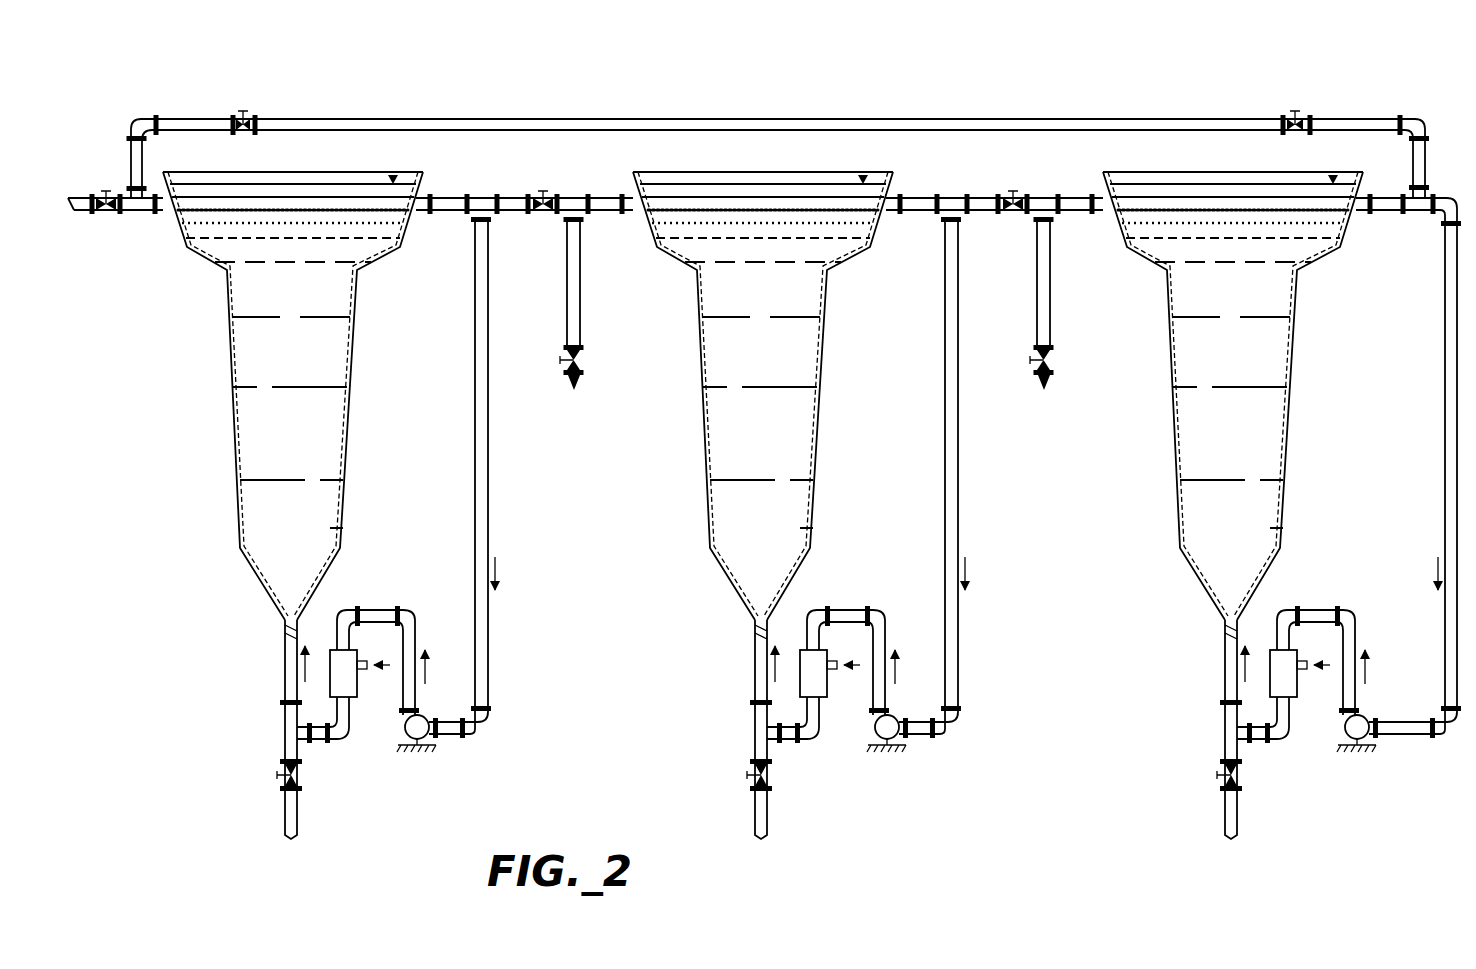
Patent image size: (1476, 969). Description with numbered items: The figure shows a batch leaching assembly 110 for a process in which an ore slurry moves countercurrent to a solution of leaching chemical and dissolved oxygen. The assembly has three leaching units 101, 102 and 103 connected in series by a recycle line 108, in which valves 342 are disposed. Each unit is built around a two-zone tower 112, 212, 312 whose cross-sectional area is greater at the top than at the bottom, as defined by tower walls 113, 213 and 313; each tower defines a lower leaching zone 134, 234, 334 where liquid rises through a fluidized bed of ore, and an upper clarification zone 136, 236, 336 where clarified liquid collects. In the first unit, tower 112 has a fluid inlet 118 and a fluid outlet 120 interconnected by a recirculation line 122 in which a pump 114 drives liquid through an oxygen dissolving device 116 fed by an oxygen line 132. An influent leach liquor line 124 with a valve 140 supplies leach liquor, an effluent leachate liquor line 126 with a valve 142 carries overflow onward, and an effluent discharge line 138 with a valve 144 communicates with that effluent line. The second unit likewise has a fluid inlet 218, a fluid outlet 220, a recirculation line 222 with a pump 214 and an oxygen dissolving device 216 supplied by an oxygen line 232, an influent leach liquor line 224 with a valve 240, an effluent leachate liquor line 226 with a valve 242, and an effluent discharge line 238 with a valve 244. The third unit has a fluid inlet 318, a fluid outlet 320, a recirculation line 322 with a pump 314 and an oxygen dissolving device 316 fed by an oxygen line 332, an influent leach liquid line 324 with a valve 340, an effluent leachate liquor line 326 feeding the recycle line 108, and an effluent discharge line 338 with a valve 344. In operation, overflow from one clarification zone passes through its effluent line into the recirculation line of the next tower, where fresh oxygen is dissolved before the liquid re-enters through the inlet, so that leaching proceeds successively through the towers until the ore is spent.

The leaching unit 101 is at (1214, 514).
The leaching unit 102 is at (762, 514).
The leaching unit 103 is at (378, 808).
The recycle line 108 is at (510, 119).
The batch leaching assembly 110 is at (942, 76).
The two-zone tower 112 is at (1246, 396).
The tower wall 113 is at (1275, 346).
The pump 114 is at (1397, 743).
The oxygen dissolving device 116 is at (1315, 717).
The fluid inlet 118 is at (1191, 637).
The fluid outlet 120 is at (1364, 179).
The recirculation line 122 is at (1415, 472).
The influent leach liquor line 124 is at (1217, 742).
The effluent leachate liquor line 126 is at (1244, 203).
The oxygen line 132 is at (1329, 643).
The leaching zone 134 is at (1278, 504).
The clarification zone 136 is at (1233, 203).
The effluent discharge line 138 is at (1076, 281).
The valve 140 is at (1194, 775).
The valve 142 is at (1022, 179).
The valve 144 is at (1010, 367).
The two-zone tower 212 is at (776, 396).
The tower wall 213 is at (805, 346).
The pump 214 is at (927, 743).
The oxygen dissolving device 216 is at (845, 717).
The fluid inlet 218 is at (721, 637).
The fluid outlet 220 is at (942, 179).
The recirculation line 222 is at (984, 473).
The influent leach liquor line 224 is at (747, 742).
The effluent leachate liquor line 226 is at (614, 179).
The oxygen line 232 is at (859, 643).
The leaching zone 234 is at (808, 504).
The clarification zone 236 is at (763, 203).
The effluent discharge line 238 is at (606, 281).
The valve 240 is at (724, 775).
The valve 242 is at (553, 179).
The valve 244 is at (540, 367).
The two-zone tower 312 is at (356, 436).
The tower wall 313 is at (358, 305).
The pump 314 is at (433, 741).
The oxygen dissolving device 316 is at (350, 698).
The fluid inlet 318 is at (285, 628).
The fluid outlet 320 is at (428, 197).
The recirculation line 322 is at (489, 457).
The influent leach liquid line 324 is at (283, 740).
The effluent leachate liquor line 326 is at (163, 197).
The oxygen line 332 is at (362, 650).
The leaching zone 334 is at (333, 528).
The clarification zone 336 is at (265, 196).
The effluent discharge line 338 is at (66, 221).
The valve 340 is at (276, 771).
The valve 342 is at (253, 116).
The valve 344 is at (108, 214).